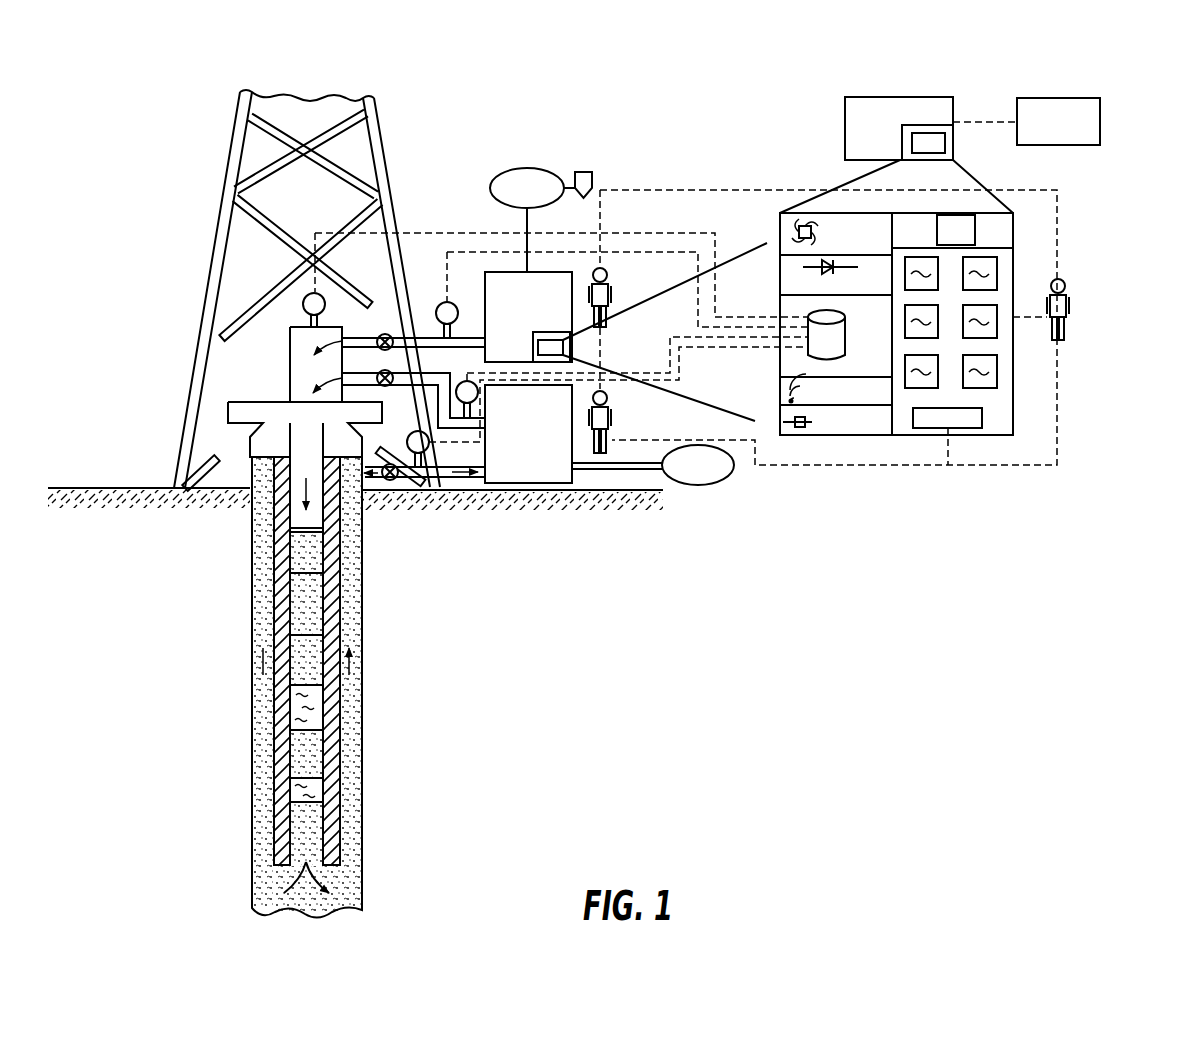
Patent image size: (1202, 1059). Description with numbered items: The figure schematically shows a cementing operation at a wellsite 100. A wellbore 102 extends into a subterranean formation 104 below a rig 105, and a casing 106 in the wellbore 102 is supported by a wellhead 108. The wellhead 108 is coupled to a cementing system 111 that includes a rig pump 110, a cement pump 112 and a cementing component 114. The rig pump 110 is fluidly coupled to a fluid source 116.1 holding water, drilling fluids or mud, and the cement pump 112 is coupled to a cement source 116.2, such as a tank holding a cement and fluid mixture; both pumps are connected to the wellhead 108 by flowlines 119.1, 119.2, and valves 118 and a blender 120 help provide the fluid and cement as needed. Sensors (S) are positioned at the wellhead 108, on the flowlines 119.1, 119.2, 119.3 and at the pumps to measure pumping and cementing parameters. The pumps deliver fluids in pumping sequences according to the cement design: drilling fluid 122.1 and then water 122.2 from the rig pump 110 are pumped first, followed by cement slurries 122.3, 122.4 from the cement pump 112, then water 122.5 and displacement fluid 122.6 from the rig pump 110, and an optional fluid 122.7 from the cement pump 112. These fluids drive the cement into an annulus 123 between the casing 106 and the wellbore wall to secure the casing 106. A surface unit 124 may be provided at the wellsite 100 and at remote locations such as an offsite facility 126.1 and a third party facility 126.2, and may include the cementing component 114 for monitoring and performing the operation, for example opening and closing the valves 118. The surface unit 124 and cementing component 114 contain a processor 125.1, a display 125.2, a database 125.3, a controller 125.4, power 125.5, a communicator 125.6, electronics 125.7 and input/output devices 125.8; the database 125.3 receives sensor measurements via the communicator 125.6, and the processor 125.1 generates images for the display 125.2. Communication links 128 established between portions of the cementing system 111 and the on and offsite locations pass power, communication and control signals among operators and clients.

The wellsite 100 is at (188, 126).
The wellbore 102 is at (260, 578).
The subterranean formation 104 is at (355, 520).
The rig 105 is at (215, 242).
The casing 106 is at (273, 452).
The wellhead 108 is at (228, 410).
The rig pump 110 is at (573, 434).
The cementing system 111 is at (645, 172).
The cement pump 112 is at (528, 285).
The cementing component 114 is at (570, 350).
The fluid source 116.1 is at (698, 465).
The cement source 116.2 is at (527, 188).
The valves 118 is at (381, 369).
The flowline 119.1 is at (414, 337).
The flowline 119.2 is at (444, 479).
The flowline 119.3 is at (472, 480).
The blender 120 is at (578, 172).
The drilling fluid 122.1 is at (352, 875).
The water 122.2 is at (315, 793).
The cement 122.3 is at (305, 755).
The cement 122.4 is at (310, 718).
The water 122.5 is at (310, 673).
The displacement fluid 122.6 is at (308, 605).
The fluid 122.7 is at (308, 553).
The annulus 123 is at (257, 833).
The surface unit 124 is at (533, 350).
The processor 125.1 is at (838, 228).
The display 125.2 is at (1003, 403).
The database 125.3 is at (807, 355).
The controller 125.4 is at (970, 433).
The power 125.5 is at (802, 427).
The communicator 125.6 is at (790, 398).
The electronics 125.7 is at (817, 284).
The input/output devices 125.8 is at (975, 222).
The offsite facility 126.1 is at (845, 110).
The third party facility 126.2 is at (1100, 110).
The communication links 128 is at (662, 190).